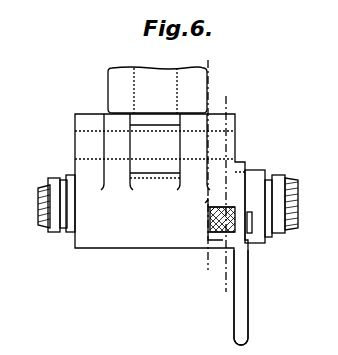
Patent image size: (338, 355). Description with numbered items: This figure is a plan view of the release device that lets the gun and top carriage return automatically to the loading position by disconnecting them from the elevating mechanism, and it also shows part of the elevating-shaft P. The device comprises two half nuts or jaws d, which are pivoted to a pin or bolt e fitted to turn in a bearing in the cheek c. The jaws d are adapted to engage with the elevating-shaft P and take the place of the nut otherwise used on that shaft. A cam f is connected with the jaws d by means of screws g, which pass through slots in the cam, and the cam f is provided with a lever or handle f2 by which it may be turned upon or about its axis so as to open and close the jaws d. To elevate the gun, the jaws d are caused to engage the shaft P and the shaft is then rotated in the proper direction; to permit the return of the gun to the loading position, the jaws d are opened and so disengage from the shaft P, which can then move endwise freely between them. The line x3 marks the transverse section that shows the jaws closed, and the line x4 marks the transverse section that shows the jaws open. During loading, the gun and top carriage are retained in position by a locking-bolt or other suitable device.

The cheek c is at (157, 90).
The pin or bolt e is at (155, 80).
The half nuts or jaws d is at (161, 229).
The cam f is at (255, 206).
The lever or handle f2 is at (248, 305).
The screws g is at (250, 236).
The elevating-shaft p is at (160, 206).
The section line x3 x3 is at (209, 167).
The section line x4 x4 is at (227, 196).